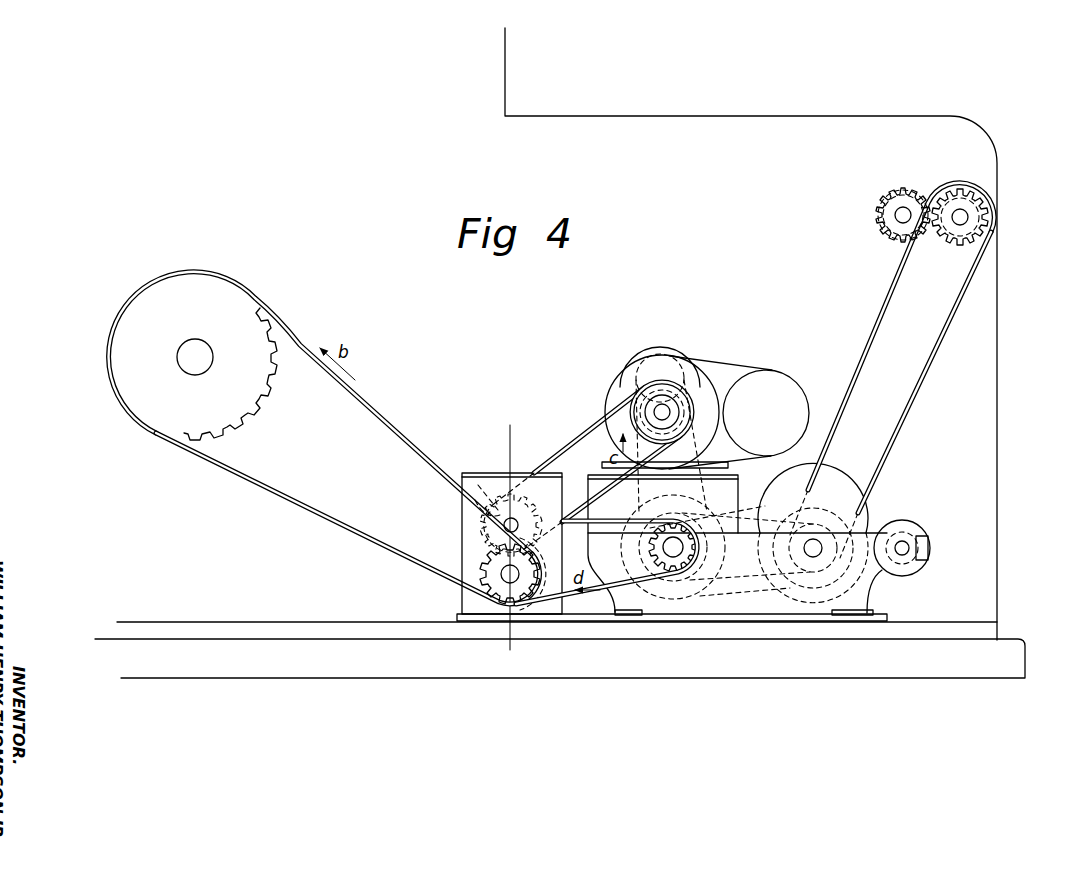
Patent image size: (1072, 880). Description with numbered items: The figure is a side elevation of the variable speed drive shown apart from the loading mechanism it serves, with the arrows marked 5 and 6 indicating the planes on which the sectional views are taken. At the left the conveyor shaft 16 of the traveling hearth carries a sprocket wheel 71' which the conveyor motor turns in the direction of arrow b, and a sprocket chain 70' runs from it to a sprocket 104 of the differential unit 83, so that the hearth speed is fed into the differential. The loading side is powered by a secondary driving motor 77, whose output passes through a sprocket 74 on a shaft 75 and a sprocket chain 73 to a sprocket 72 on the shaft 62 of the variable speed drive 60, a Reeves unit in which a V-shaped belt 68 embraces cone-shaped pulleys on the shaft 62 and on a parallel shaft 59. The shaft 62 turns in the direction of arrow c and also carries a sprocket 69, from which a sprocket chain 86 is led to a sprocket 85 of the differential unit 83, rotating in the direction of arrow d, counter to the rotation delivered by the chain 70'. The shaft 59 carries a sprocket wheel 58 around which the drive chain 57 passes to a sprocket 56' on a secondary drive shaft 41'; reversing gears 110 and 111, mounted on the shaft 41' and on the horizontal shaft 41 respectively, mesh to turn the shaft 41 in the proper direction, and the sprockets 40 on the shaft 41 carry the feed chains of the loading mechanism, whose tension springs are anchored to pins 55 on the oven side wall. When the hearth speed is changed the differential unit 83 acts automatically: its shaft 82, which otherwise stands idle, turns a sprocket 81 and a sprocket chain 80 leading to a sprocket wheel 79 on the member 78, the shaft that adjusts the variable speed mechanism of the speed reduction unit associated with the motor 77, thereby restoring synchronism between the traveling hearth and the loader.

The section line 5- 5 is at (1047, 153).
The section line 6- 6 is at (540, 428).
The sprocket shaft 16 is at (203, 368).
The sprocket wheel 71' is at (284, 413).
The sprocket chain 70' is at (348, 518).
The differential unit 83 is at (456, 467).
The sprocket 81 is at (495, 492).
The sprocket 104 is at (490, 602).
The sprocket 85 is at (548, 622).
The shaft 82 is at (519, 519).
The sprocket chain 80 is at (542, 468).
The shaft 78 is at (648, 402).
The sprocket wheel 79 is at (640, 412).
The sprocket chain 73 is at (722, 424).
The shaft 75 is at (682, 348).
The sprocket 74 is at (650, 348).
The secondary driving motor 77 is at (770, 392).
The sprocket 72 is at (742, 486).
The sprocket chain 86 is at (587, 614).
The shaft 62 is at (673, 560).
The sprocket 69 is at (663, 568).
The belt 68 is at (725, 612).
The shaft 59 is at (818, 560).
The sprocket wheel 58 is at (817, 508).
The variable speed drive 60 is at (766, 500).
The pins 55 is at (887, 522).
The drive chain 57 is at (946, 333).
The sprocket 56' is at (935, 336).
The shaft 41 is at (876, 215).
The sprockets 40 is at (880, 208).
The reversing gear 111 is at (897, 192).
The secondary drive shaft 41' is at (994, 217).
The reversing gear 110 is at (968, 190).